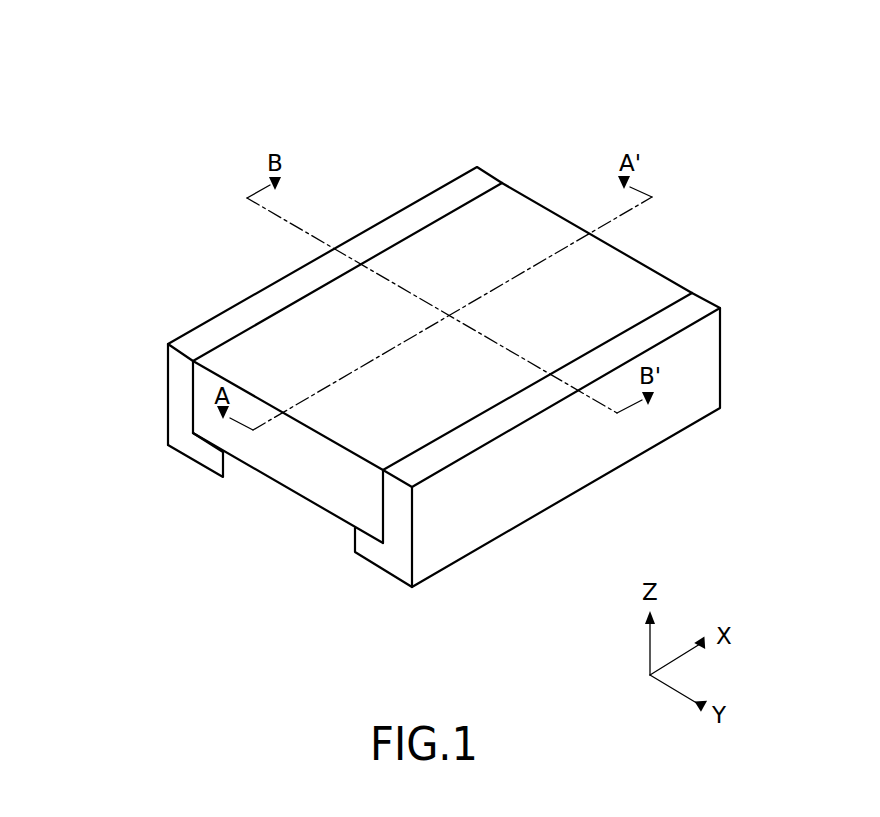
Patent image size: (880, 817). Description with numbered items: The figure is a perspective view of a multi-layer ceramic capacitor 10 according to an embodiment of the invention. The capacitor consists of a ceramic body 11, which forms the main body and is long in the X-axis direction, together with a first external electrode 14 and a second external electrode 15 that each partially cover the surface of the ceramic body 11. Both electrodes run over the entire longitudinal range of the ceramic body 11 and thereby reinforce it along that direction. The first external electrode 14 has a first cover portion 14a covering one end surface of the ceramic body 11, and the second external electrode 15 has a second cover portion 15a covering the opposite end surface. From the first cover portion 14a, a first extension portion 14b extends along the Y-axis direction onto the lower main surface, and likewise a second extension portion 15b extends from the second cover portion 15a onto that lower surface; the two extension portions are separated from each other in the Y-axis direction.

The multi-layer ceramic capacitor 10 is at (504, 98).
The ceramic body 11 is at (261, 516).
The first external electrode 14 is at (150, 452).
The first cover portion 14a is at (182, 392).
The first extension portion 14b is at (208, 455).
The second external electrode 15 is at (508, 566).
The second cover portion 15a is at (698, 378).
The second extension portion 15b is at (370, 548).